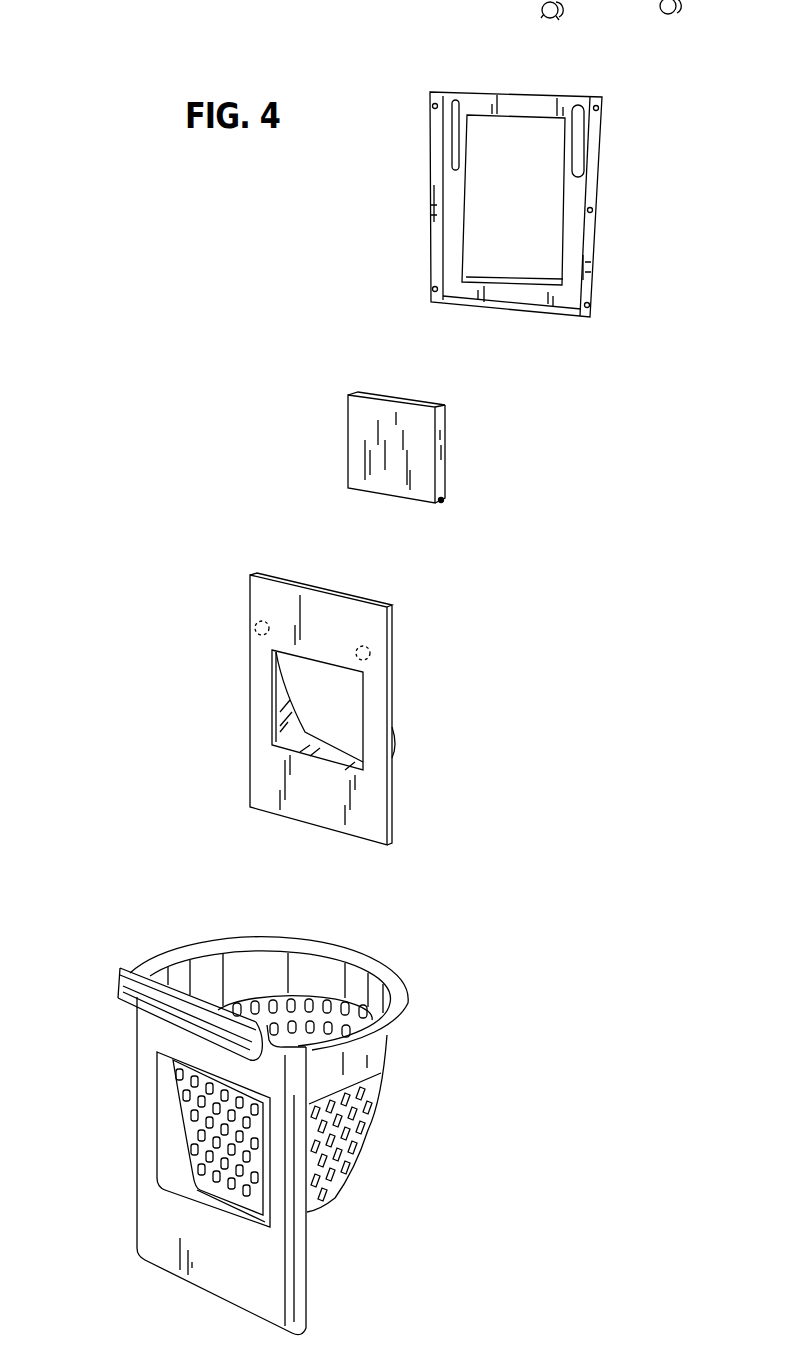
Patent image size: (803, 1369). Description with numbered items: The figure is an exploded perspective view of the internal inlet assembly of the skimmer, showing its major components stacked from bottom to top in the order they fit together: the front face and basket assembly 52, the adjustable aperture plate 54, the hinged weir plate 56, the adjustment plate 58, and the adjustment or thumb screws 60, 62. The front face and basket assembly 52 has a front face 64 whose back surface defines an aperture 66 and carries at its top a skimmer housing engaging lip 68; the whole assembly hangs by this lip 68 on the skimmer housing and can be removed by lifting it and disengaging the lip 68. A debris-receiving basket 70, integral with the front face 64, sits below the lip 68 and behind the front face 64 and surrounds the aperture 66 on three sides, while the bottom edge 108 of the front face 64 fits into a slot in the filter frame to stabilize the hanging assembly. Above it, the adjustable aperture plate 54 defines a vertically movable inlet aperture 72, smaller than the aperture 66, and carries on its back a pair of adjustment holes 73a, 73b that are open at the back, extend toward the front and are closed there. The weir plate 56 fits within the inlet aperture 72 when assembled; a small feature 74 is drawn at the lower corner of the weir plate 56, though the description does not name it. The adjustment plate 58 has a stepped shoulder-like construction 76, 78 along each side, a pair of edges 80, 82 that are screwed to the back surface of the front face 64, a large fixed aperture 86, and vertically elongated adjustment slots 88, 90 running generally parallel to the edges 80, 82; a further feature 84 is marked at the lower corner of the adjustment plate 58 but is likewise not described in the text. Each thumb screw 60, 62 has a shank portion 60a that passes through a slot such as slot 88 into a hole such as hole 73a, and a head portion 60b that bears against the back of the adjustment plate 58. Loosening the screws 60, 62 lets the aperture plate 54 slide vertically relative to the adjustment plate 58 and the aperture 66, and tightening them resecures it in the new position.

The front face and basket assembly 52 is at (241, 1136).
The adjustable aperture plate 54 is at (326, 709).
The hinged weir plate 56 is at (404, 451).
The adjustment plate 58 is at (517, 198).
The adjustment or thumb screw 60 is at (534, 9).
The shank portion 60a is at (541, 16).
The head portion 60b is at (559, 18).
The adjustment or thumb screw 62 is at (680, 14).
The front face 64 is at (220, 1166).
The aperture 66 is at (262, 1248).
The skimmer housing engaging lip 68 is at (130, 988).
The debris-receiving basket 70 is at (312, 1104).
The movable inlet aperture 72 is at (355, 734).
The adjustment hole 73a is at (268, 618).
The adjustment hole 73b is at (371, 658).
The pin 74 is at (445, 500).
The stepped shoulder-like construction 76 is at (437, 96).
The stepped shoulder-like construction 78 is at (600, 98).
The edge 80 is at (432, 192).
The edge 82 is at (597, 184).
The bottom rail 84 is at (593, 298).
The large fixed aperture 86 is at (513, 285).
The adjustment slot 88 is at (458, 100).
The adjustment slot 90 is at (580, 102).
The bottom edge 108 is at (222, 1265).